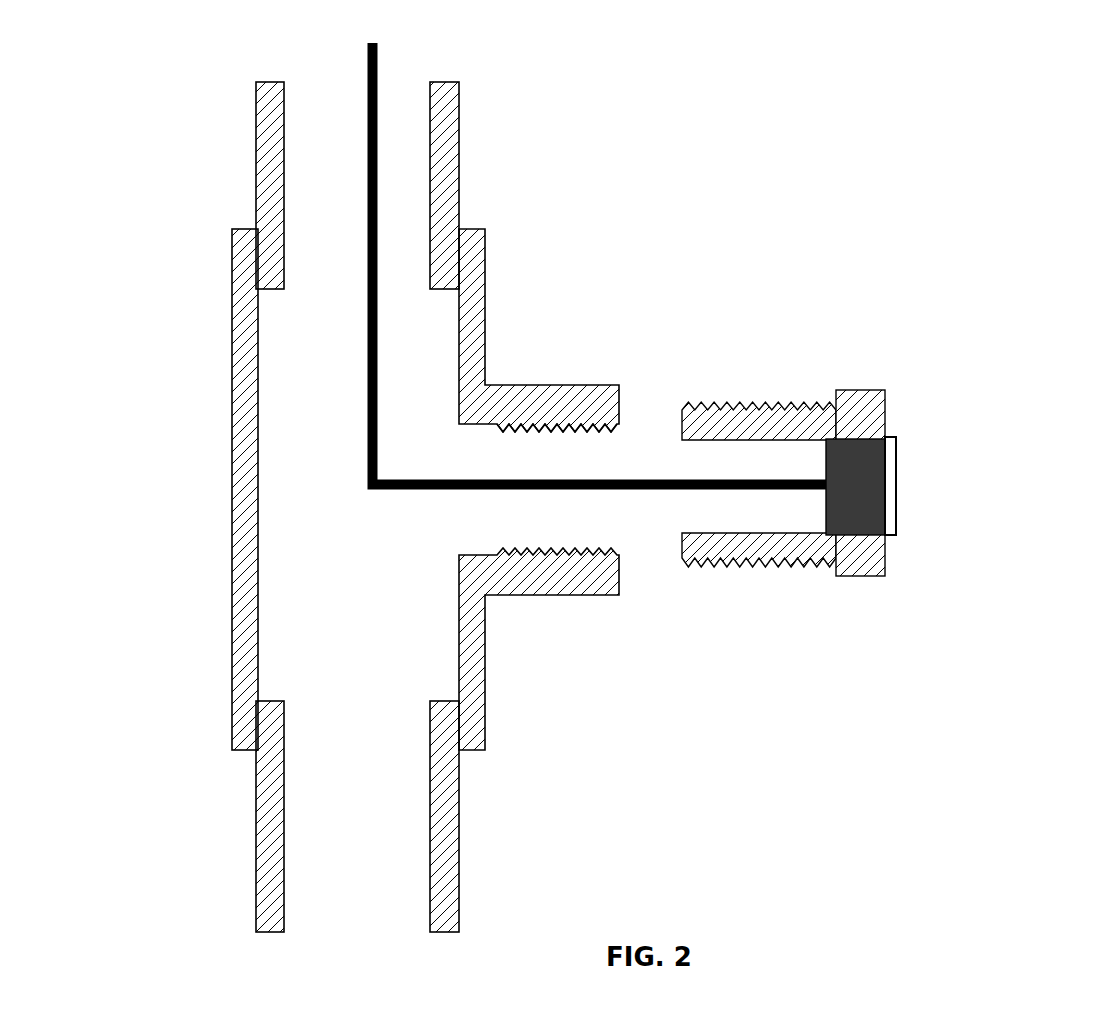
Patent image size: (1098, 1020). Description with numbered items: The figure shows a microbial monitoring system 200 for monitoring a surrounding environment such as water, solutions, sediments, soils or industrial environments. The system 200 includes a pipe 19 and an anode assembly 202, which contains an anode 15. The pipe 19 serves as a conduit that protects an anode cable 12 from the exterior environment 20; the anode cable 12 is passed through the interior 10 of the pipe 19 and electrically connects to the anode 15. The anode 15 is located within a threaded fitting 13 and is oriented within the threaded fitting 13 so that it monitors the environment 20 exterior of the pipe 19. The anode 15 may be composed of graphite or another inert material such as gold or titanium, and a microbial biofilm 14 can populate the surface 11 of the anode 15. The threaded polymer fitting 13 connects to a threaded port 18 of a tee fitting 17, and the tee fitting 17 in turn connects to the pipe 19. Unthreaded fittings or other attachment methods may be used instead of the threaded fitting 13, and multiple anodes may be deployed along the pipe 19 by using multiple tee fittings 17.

The interior 10 is at (328, 392).
The exterior environment 20 is at (882, 430).
The microbial monitoring system 200 is at (600, 487).
The anode assembly 202 is at (815, 430).
The pipe 19 is at (459, 857).
The tee fitting 17 is at (486, 298).
The threaded port 18 is at (581, 430).
The anode cable 12 is at (702, 478).
The threaded fitting 13 is at (788, 403).
The surface 11 is at (897, 457).
The anode 15 is at (886, 492).
The microbial biofilm 14 is at (897, 536).